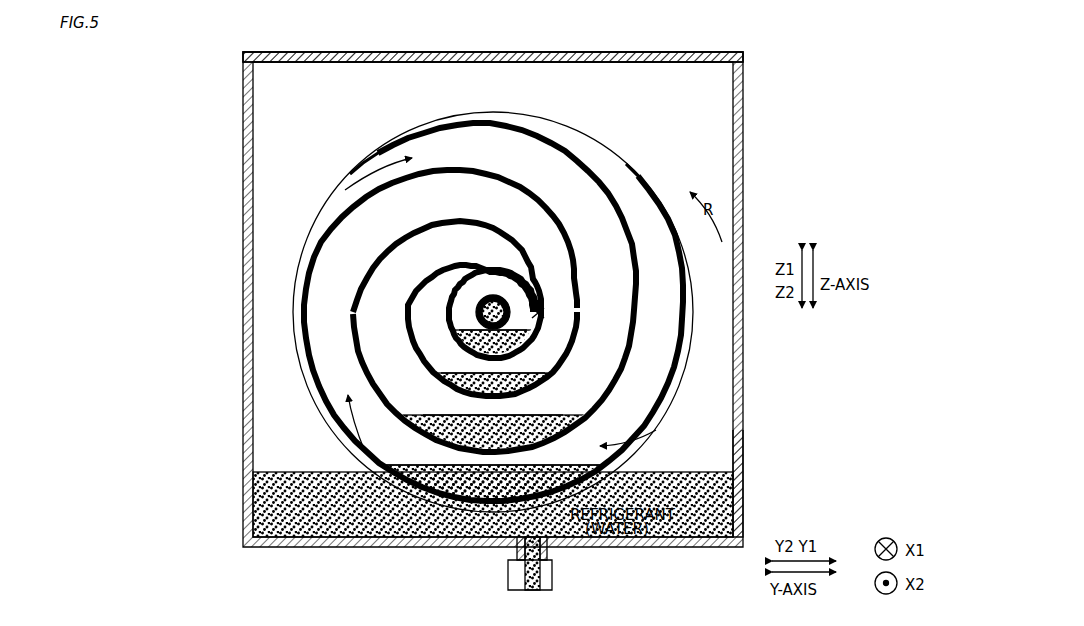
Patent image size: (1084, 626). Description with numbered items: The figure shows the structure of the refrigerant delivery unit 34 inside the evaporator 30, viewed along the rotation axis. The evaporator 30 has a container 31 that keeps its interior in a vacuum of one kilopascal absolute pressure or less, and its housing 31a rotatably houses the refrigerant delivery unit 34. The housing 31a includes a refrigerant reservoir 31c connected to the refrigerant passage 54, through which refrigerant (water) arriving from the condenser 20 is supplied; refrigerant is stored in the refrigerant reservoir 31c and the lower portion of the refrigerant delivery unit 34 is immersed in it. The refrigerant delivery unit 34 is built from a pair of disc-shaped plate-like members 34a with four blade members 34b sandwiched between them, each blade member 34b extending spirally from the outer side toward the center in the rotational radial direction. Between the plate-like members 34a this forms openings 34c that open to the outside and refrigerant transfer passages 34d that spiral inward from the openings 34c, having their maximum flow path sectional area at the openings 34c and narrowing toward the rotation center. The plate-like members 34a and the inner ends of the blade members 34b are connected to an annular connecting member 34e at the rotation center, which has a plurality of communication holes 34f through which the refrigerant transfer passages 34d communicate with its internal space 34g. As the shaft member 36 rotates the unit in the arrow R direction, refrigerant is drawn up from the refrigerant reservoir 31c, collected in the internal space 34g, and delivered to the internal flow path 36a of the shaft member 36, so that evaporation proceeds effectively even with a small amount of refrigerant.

The condenser 20 is at (552, 576).
The evaporator 30 is at (159, 90).
The container 31 is at (742, 50).
The housing 31a is at (514, 37).
The refrigerant reservoir 31c is at (738, 507).
The refrigerant delivery unit 34 is at (422, 314).
The plate-like member 34a is at (545, 123).
The blade member 34b is at (452, 127).
The opening 34c is at (316, 206).
The refrigerant transfer passage 34d is at (348, 178).
The connecting member 34e is at (296, 322).
The communication hole 34f is at (352, 335).
The internal space 34g is at (538, 316).
The shaft member 36 is at (476, 252).
The internal flow path 36a is at (456, 300).
The refrigerant passage 54 is at (553, 578).